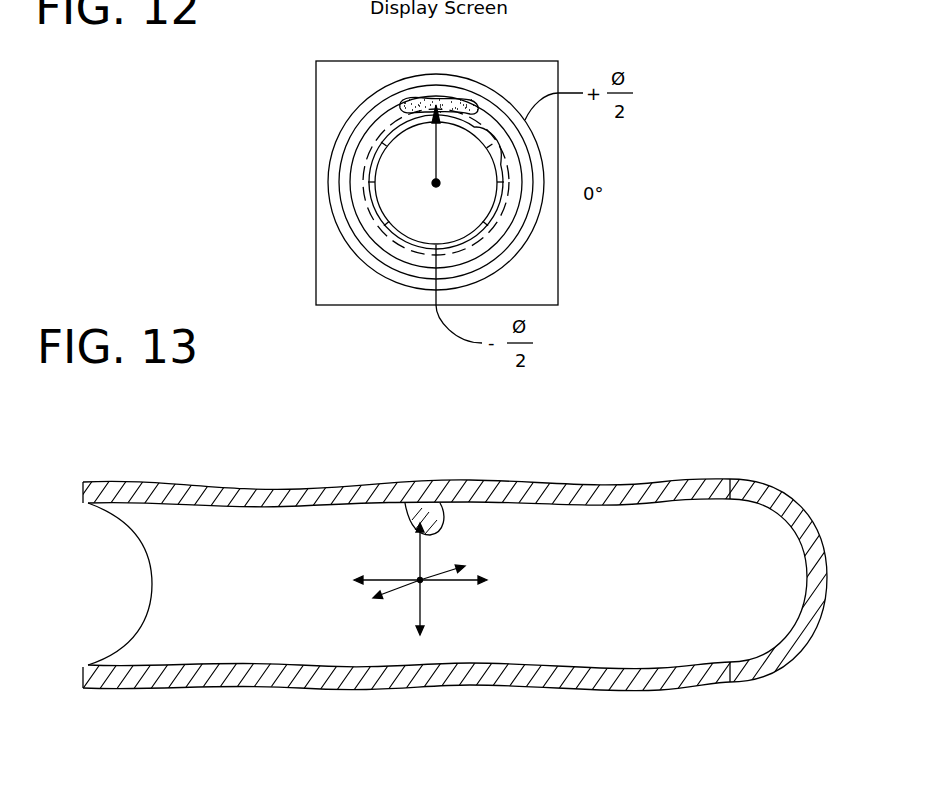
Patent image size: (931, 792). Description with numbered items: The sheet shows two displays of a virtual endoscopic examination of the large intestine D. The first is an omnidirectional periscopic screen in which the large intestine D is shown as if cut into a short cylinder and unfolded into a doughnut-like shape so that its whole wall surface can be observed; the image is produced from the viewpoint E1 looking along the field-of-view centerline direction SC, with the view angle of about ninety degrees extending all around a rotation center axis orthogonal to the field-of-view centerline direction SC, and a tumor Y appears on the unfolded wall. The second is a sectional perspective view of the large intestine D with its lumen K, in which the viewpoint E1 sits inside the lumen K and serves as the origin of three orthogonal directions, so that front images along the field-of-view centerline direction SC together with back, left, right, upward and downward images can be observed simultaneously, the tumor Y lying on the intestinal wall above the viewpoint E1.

In FIG. 12, the field-of-view centerline direction SC is at (437, 157).
In FIG. 12, the tumor Y is at (462, 102).
In FIG. 13, the tumor Y is at (465, 500).
In FIG. 13, the lumen K is at (198, 548).
In FIG. 13, the large intestine D is at (662, 480).
In FIG. 13, the viewpoint E1 is at (420, 580).